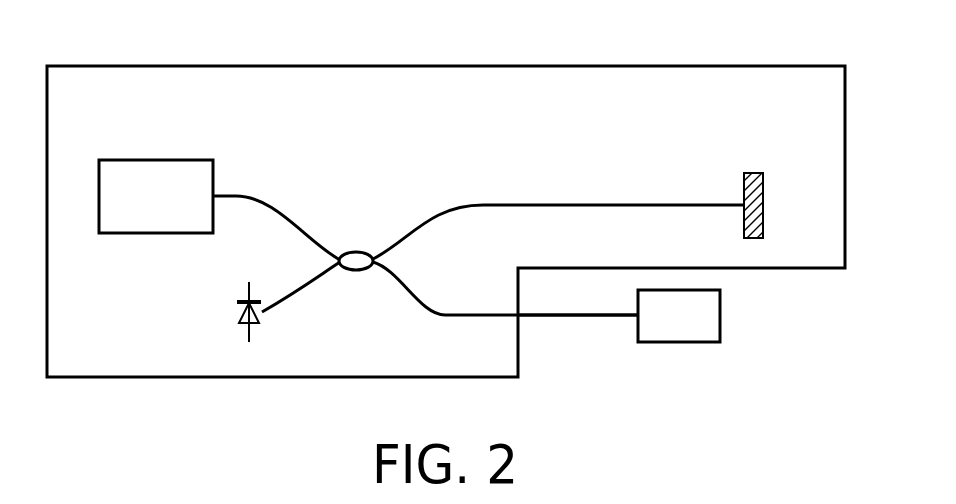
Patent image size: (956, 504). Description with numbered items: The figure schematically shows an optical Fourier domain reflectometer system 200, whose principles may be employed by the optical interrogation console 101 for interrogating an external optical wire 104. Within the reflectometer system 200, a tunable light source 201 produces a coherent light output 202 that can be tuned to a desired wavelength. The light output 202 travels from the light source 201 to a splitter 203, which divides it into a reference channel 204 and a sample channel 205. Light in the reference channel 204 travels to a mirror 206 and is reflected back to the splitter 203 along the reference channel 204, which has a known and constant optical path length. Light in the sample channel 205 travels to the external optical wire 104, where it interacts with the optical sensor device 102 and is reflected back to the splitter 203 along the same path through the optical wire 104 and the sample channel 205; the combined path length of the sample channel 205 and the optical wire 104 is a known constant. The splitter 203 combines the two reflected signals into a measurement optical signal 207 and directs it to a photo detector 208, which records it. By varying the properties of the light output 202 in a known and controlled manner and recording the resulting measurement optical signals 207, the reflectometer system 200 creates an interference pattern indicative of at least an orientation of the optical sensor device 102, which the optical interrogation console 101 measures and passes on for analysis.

The optical interrogation console 101 is at (652, 65).
The optical sensor device 102 is at (702, 331).
The optical wire 104 is at (565, 317).
The optical Fourier domain reflectometer system 200 is at (197, 128).
The tunable light source 201 is at (178, 211).
The coherent light output 202 is at (270, 205).
The splitter 203 is at (356, 258).
The reference channel 204 is at (563, 204).
The sample channel 205 is at (420, 300).
The mirror 206 is at (765, 203).
The measurement optical signal 207 is at (271, 301).
The photo detector 208 is at (235, 314).